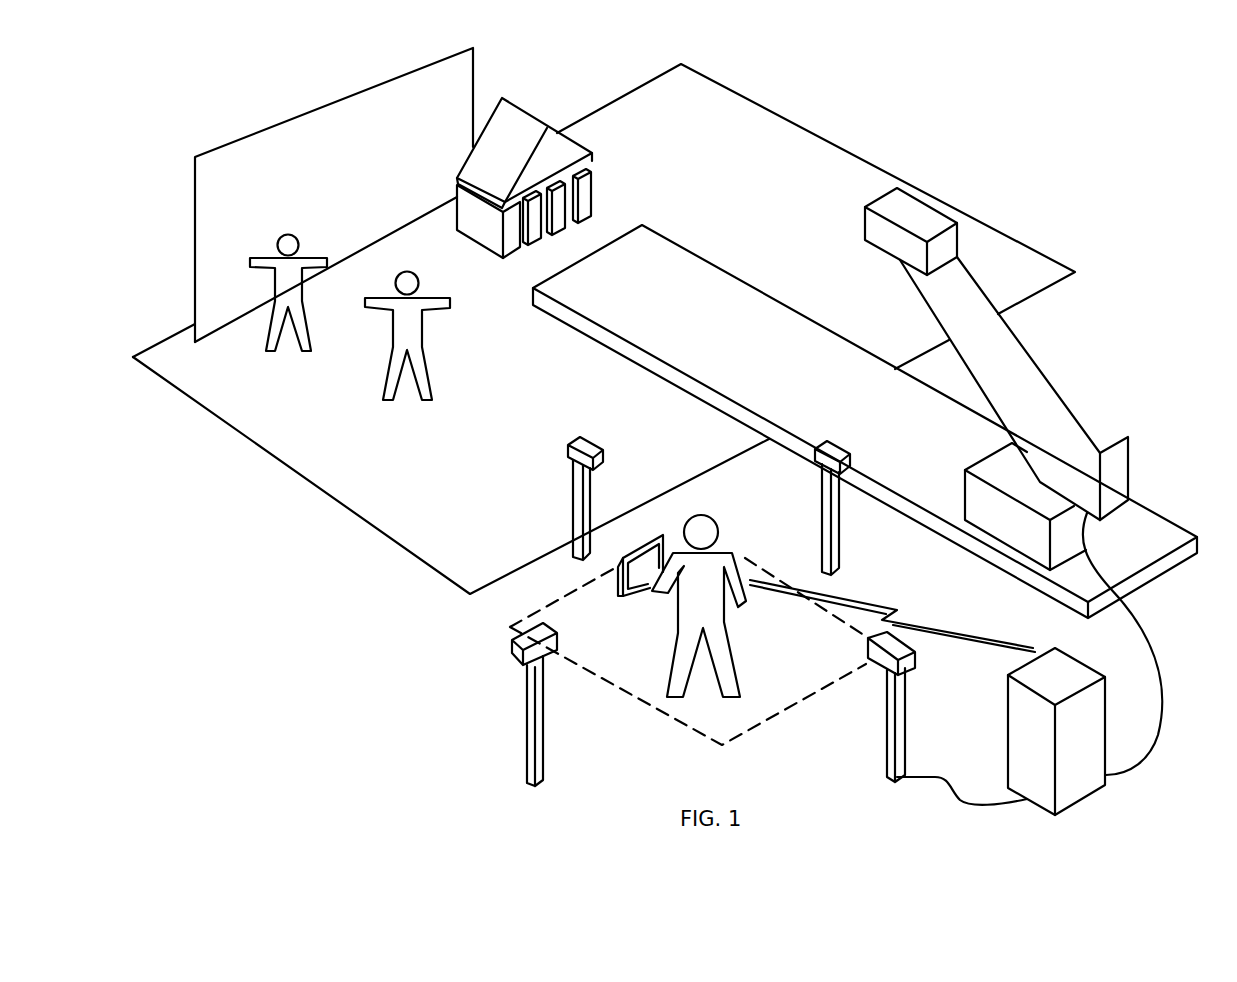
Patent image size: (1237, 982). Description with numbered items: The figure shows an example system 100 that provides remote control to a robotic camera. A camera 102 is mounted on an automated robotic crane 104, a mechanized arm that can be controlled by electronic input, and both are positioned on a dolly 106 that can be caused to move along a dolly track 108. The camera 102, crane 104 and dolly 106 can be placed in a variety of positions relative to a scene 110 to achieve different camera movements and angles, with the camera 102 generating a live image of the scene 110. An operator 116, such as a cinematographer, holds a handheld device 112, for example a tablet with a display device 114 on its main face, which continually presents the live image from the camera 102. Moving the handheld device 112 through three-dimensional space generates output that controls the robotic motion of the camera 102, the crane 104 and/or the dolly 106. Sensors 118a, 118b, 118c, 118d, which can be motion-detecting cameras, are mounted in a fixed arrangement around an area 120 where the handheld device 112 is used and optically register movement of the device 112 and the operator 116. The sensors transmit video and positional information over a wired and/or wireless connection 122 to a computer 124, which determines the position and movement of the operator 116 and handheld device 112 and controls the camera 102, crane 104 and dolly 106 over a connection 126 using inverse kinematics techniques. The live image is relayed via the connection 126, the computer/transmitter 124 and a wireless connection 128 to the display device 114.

The system 100 is at (1150, 134).
The camera 102 is at (865, 206).
The robotic crane 104 is at (1103, 400).
The dolly 106 is at (965, 470).
The dolly track 108 is at (805, 310).
The scene 110 is at (517, 341).
The handheld device 112 is at (624, 556).
The display device 114 is at (636, 572).
The operator 116 is at (712, 516).
The sensor 118a is at (520, 667).
The sensor 118b is at (570, 442).
The sensor 118c is at (845, 445).
The sensor 118d is at (907, 675).
The area 120 is at (747, 730).
The wired and/or wireless connection 122 is at (952, 793).
The computer 124 is at (1105, 787).
The wired and/or wireless connection 126 is at (1167, 703).
The wireless connection 128 is at (900, 605).